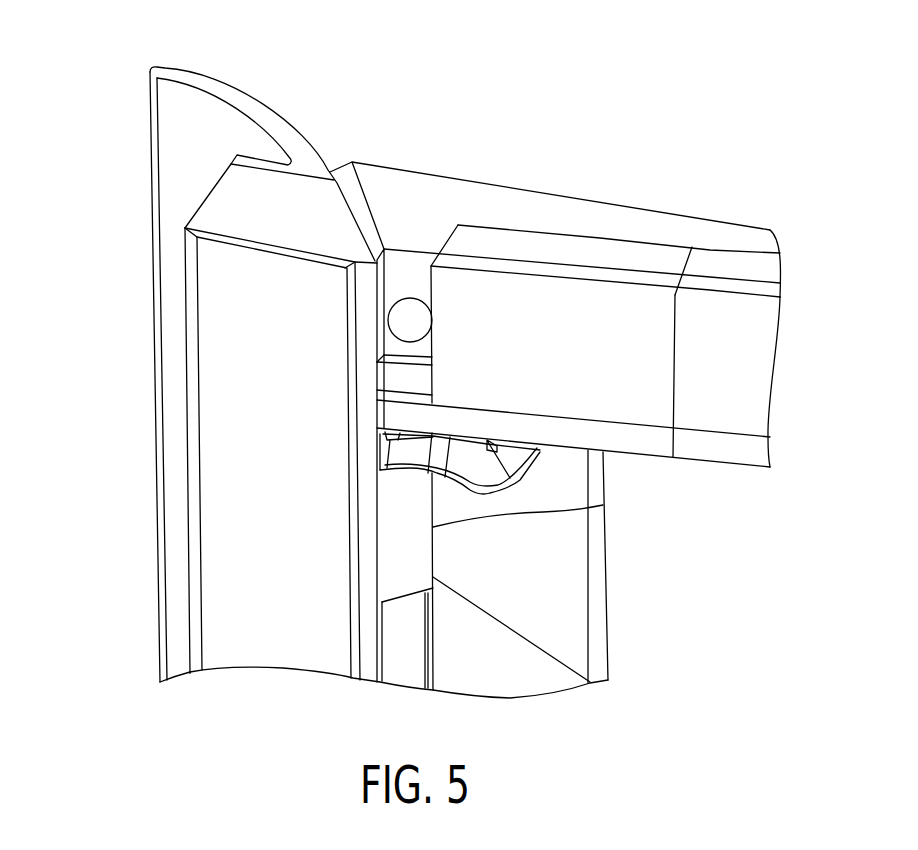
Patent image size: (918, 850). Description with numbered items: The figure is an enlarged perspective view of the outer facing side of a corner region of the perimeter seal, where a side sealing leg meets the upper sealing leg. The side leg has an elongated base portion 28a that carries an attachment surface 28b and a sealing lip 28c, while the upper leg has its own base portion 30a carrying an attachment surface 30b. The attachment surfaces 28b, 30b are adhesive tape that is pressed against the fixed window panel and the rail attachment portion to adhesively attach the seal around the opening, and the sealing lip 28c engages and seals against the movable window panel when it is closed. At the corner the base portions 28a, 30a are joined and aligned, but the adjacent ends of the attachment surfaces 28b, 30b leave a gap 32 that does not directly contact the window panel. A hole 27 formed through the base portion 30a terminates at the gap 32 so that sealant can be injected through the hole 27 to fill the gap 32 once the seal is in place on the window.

The hole 27 is at (402, 303).
The base portion 28a is at (183, 287).
The attachment surface 28b is at (218, 478).
The sealing lip 28c is at (235, 93).
The base portion 30a is at (582, 196).
The attachment surface 30b is at (598, 302).
The gap 32 is at (427, 263).